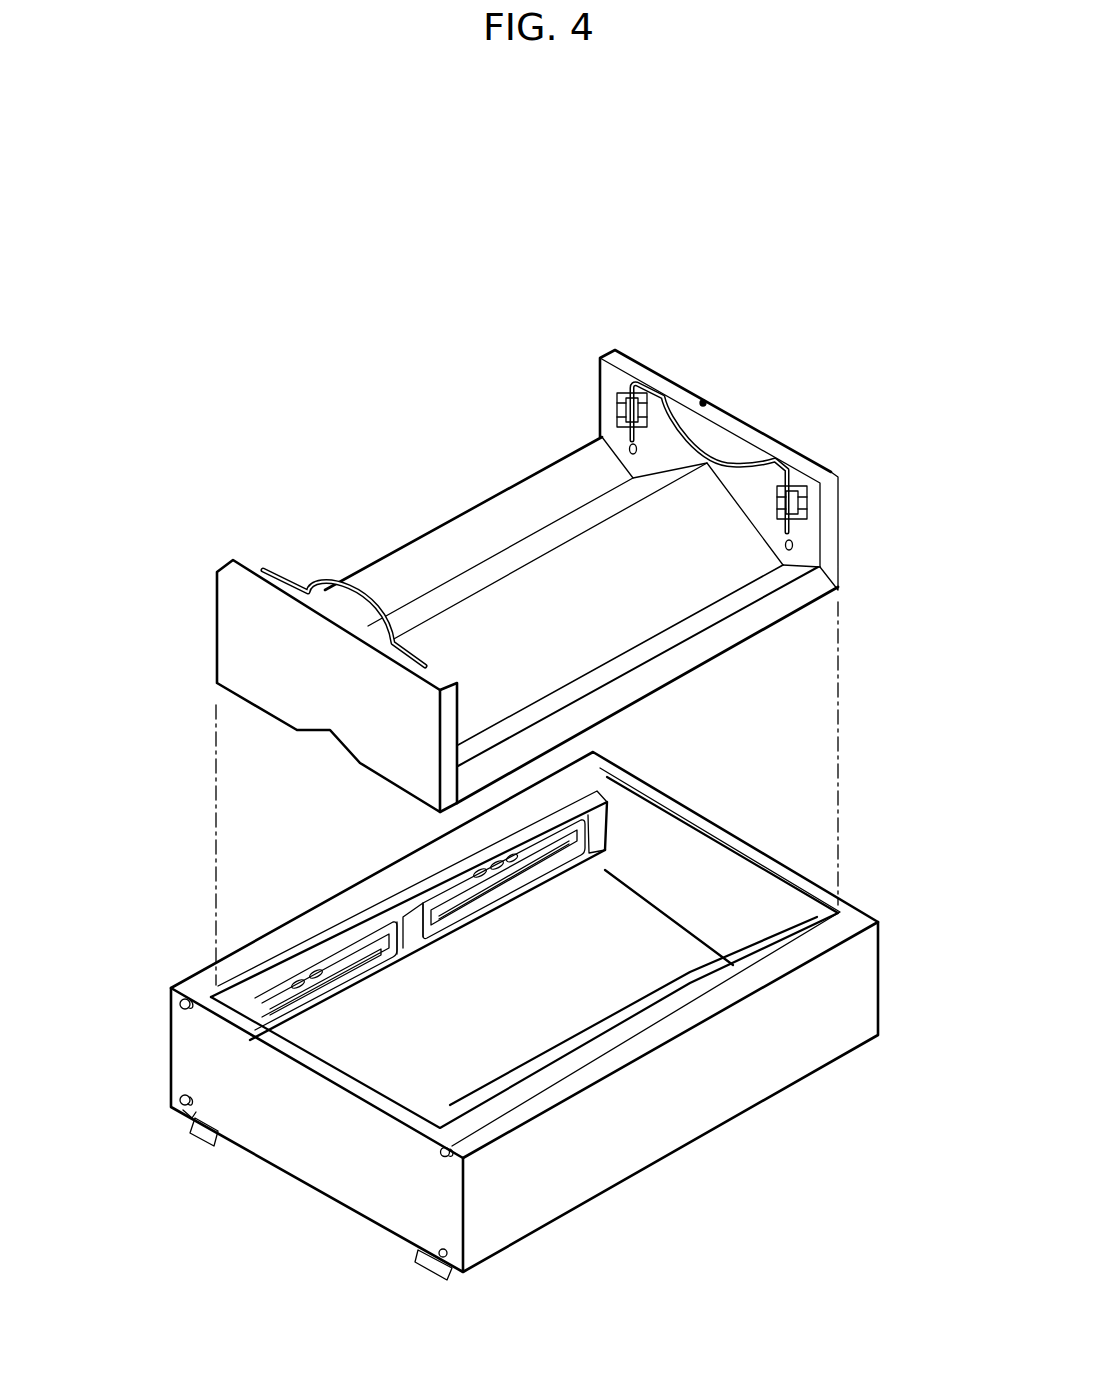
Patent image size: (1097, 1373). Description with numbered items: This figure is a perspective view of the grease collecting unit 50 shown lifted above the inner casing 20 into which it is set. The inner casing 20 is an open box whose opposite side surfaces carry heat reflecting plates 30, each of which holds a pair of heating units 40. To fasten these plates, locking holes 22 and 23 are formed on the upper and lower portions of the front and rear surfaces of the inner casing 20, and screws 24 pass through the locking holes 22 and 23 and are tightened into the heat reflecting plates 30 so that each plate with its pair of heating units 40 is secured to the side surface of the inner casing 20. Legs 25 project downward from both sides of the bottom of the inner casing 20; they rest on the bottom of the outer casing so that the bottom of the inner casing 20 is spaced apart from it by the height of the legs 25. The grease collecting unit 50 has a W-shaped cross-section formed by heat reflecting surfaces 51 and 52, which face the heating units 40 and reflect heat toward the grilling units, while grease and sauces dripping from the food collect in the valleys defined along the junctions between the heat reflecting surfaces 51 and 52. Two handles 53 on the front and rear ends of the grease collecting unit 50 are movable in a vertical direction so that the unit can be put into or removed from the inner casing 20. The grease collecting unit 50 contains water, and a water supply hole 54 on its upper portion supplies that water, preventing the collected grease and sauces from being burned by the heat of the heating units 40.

The inner casing 20 is at (685, 1105).
The locking hole 22 is at (180, 1002).
The locking hole 23 is at (187, 1118).
The screw 24 is at (170, 1020).
The leg 25 is at (203, 1143).
The heat reflecting plate 30 is at (607, 870).
The heating unit 40 is at (365, 978).
The grease collecting unit 50 is at (651, 349).
The heat reflecting surface 51 is at (552, 584).
The heat reflecting surface 52 is at (390, 574).
The handle 53 is at (314, 590).
The water supply hole 54 is at (703, 400).